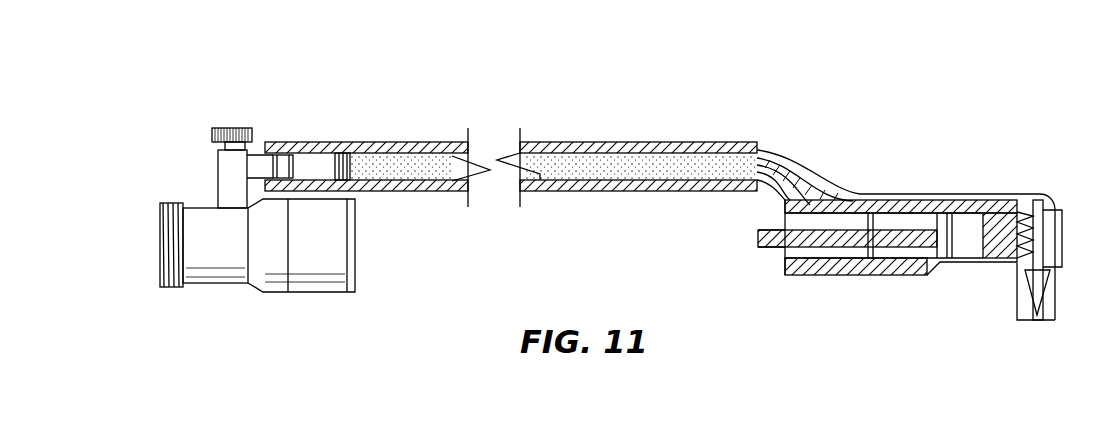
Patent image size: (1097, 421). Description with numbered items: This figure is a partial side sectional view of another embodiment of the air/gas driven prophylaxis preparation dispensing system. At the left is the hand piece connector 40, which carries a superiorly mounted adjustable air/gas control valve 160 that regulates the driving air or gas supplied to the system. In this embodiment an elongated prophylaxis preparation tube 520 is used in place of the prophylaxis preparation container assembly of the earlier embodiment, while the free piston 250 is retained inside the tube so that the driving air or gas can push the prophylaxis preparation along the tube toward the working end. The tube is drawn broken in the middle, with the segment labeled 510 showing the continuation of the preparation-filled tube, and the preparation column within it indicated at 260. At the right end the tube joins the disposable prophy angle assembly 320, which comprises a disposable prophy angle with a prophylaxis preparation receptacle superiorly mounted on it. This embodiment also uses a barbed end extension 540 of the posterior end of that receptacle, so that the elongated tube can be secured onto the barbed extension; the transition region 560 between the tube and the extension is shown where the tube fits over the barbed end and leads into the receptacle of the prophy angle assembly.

The adjustable air/gas control valve 160 is at (158, 142).
The elongated prophylaxis preparation tube 520 is at (225, 127).
The hand piece connector 40 is at (220, 299).
The barbed end extension 540 is at (397, 142).
The free piston 250 is at (335, 160).
The plug 260 is at (423, 170).
The catheter tube section 510 is at (708, 100).
The strain relief bend 560 is at (772, 148).
The disposable prophy angle assembly 320 is at (947, 146).